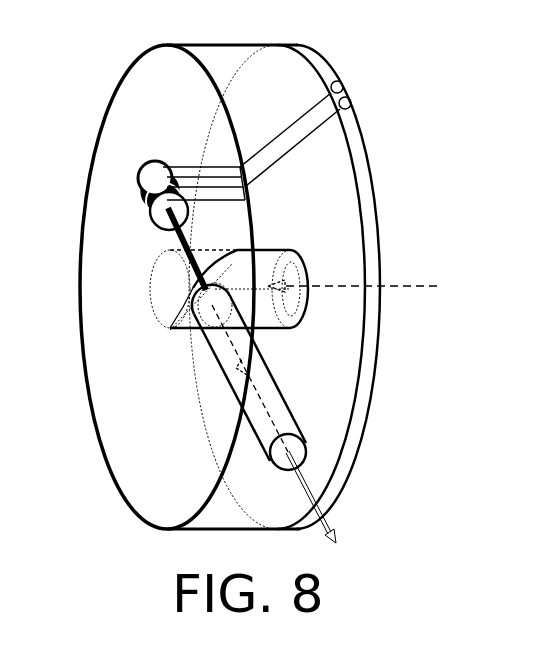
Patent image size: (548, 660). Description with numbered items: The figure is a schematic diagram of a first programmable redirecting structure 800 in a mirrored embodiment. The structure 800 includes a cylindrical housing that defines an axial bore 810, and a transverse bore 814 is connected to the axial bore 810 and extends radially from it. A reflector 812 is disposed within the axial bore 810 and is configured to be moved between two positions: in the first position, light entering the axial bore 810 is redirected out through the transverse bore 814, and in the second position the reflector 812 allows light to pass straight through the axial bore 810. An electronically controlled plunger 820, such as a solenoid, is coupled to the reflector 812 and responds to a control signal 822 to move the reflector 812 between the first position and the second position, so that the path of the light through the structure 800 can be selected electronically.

The first programmable redirecting structure 800 is at (216, 45).
The axial bore 810 is at (283, 249).
The reflector 812 is at (190, 288).
The transverse bore 814 is at (292, 410).
The electronically controlled plunger 820 is at (143, 162).
The control signal 822 is at (349, 97).